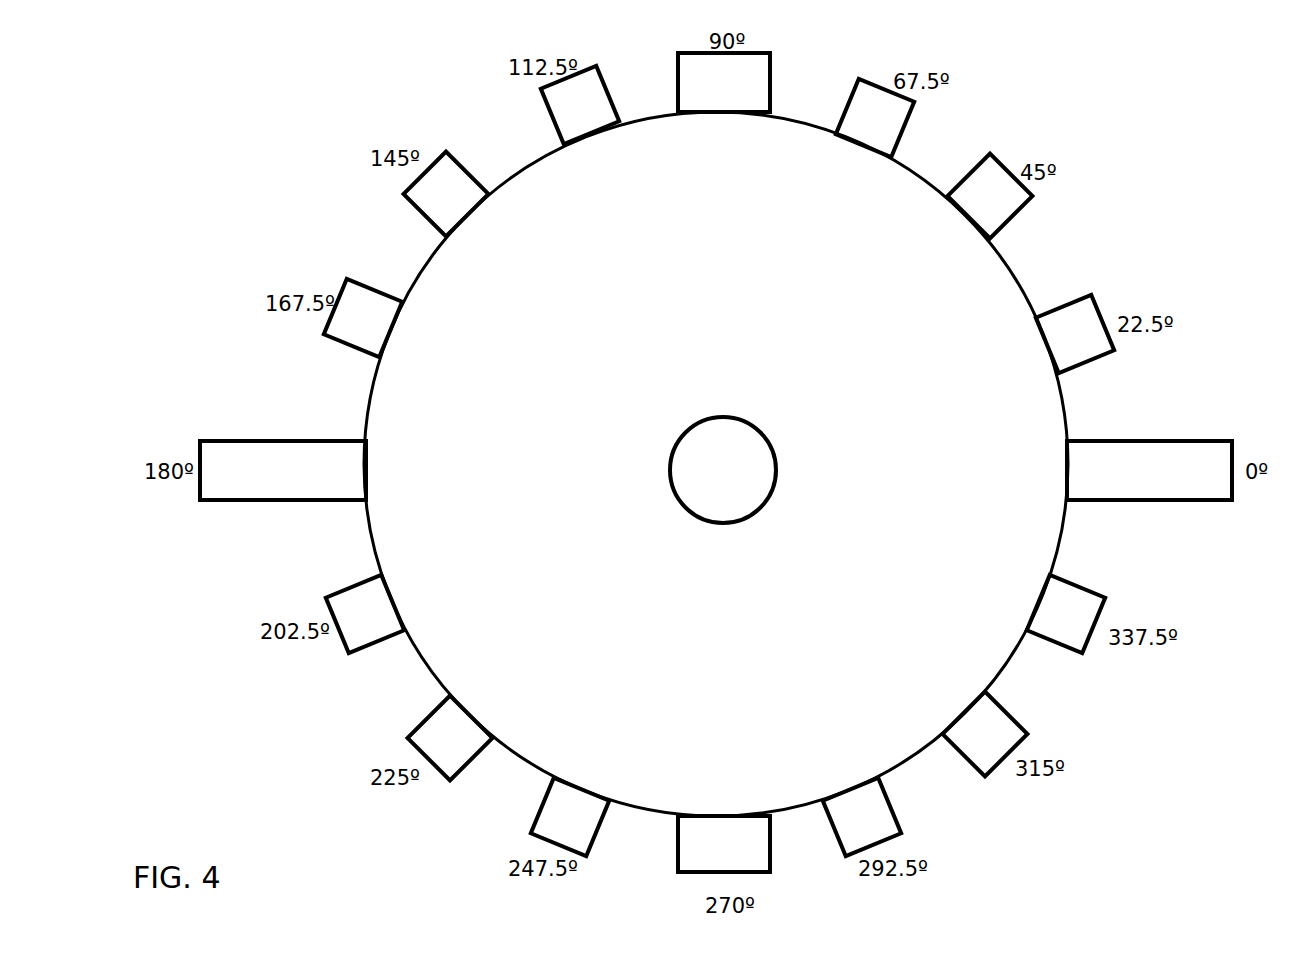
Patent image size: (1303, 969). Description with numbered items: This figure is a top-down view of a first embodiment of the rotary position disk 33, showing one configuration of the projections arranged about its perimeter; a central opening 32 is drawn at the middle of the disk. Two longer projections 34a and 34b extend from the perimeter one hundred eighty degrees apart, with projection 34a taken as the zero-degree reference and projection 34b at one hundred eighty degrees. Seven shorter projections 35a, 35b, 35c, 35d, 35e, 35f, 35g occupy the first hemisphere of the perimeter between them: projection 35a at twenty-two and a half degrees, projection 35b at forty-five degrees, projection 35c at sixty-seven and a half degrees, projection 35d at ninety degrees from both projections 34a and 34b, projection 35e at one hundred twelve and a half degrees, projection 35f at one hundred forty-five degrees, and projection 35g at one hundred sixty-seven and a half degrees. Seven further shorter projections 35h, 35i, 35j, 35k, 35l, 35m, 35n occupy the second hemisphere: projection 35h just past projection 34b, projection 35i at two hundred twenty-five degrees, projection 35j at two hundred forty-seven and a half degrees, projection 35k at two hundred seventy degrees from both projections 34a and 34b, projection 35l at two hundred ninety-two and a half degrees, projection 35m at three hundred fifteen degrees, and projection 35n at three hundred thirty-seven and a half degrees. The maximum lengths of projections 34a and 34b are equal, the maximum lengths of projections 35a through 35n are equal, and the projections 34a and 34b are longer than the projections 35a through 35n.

The central hub aperture 32 is at (671, 487).
The rotary position disk 33 is at (423, 663).
The projection 34a is at (1149, 470).
The projection 34b is at (283, 470).
The projection 35a is at (1075, 334).
The projection 35b is at (990, 196).
The projection 35c is at (875, 118).
The projection 35d is at (724, 82).
The projection 35e is at (580, 105).
The projection 35f is at (446, 194).
The projection 35g is at (363, 318).
The projection 35h is at (365, 614).
The projection 35i is at (450, 738).
The projection 35j is at (570, 817).
The projection 35k is at (724, 844).
The projection 35l is at (862, 817).
The projection 35m is at (985, 734).
The projection 35n is at (1066, 614).